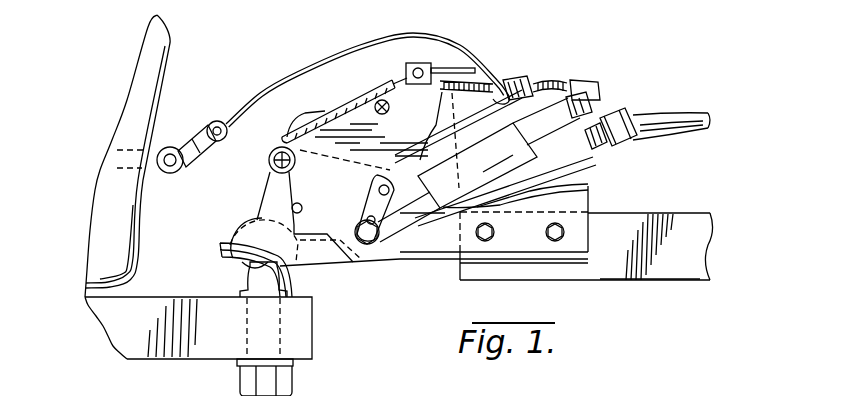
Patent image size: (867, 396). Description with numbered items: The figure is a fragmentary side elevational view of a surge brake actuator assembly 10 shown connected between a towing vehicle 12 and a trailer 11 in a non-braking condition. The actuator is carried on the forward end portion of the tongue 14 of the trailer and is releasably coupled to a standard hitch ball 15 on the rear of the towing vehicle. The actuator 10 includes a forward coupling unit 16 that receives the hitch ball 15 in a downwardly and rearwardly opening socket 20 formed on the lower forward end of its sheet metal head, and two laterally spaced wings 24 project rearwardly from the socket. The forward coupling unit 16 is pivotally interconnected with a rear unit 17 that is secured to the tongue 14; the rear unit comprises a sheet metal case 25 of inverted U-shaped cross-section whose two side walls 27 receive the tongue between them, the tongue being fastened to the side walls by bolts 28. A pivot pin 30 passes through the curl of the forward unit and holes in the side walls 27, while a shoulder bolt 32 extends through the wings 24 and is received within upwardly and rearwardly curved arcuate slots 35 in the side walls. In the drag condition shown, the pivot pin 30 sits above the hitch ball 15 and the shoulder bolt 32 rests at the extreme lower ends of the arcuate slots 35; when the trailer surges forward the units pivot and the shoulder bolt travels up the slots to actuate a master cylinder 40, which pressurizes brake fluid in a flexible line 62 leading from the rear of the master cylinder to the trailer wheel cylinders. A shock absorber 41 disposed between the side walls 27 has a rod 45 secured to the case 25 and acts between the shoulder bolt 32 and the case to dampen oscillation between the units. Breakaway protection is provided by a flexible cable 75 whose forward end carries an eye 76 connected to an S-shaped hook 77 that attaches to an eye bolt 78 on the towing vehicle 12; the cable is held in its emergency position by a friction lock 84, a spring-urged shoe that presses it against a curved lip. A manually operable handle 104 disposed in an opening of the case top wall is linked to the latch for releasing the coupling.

The surge brake actuator assembly 10 is at (590, 60).
The trailer 11 is at (693, 213).
The towing vehicle 12 is at (128, 102).
The tongue 14 is at (653, 281).
The hitch ball 15 is at (240, 270).
The forward coupling unit 16 is at (252, 186).
The rear unit 17 is at (351, 97).
The socket 20 is at (230, 237).
The wings 24 is at (320, 264).
The case 25 is at (432, 248).
The side walls 27 is at (590, 182).
The bolts 28 is at (550, 240).
The pivot pin 30 is at (279, 147).
The shoulder bolt 32 is at (370, 253).
The arcuate slots 35 is at (370, 180).
The master cylinder 40 is at (593, 157).
The shock absorber 41 is at (432, 137).
The rod 45 is at (543, 130).
The flexible line 62 is at (690, 113).
The flexible cable 75 is at (294, 74).
The eye 76 is at (214, 121).
The S-shaped hook 77 is at (200, 133).
The eye bolt 78 is at (168, 180).
The friction lock 84 is at (527, 80).
The handle 104 is at (463, 63).